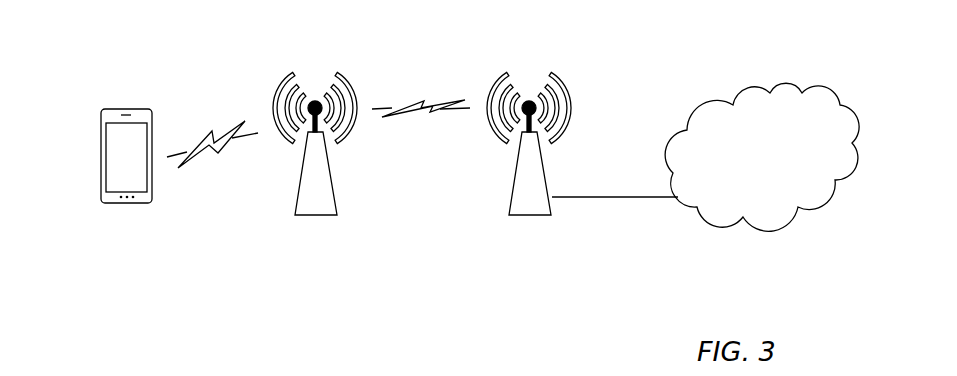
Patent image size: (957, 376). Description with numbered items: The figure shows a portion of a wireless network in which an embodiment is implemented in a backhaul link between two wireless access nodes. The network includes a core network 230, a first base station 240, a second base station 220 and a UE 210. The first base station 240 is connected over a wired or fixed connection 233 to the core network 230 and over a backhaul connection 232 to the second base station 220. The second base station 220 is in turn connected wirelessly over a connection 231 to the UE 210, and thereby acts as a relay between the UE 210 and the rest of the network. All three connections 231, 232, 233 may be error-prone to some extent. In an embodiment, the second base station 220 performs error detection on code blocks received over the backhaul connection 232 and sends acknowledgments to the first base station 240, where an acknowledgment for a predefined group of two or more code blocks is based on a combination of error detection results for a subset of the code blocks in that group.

The UE 210 is at (127, 220).
The second base station 220 is at (302, 235).
The core network 230 is at (762, 243).
The connection 231 is at (200, 108).
The backhaul connection 232 is at (418, 80).
The wired connection 233 is at (623, 180).
The first base station 240 is at (517, 235).